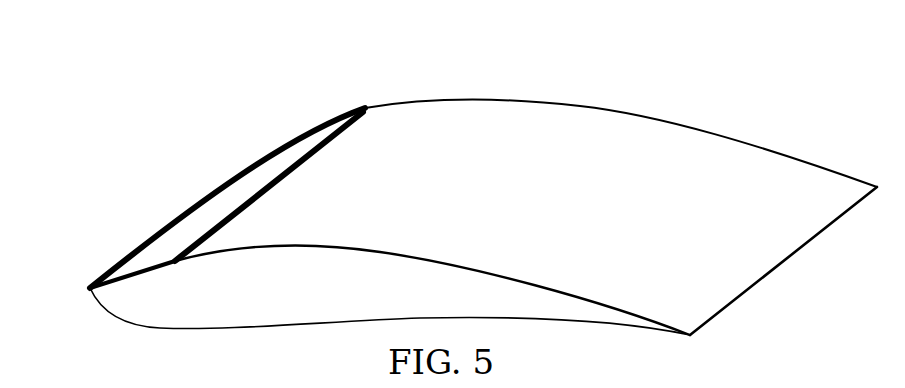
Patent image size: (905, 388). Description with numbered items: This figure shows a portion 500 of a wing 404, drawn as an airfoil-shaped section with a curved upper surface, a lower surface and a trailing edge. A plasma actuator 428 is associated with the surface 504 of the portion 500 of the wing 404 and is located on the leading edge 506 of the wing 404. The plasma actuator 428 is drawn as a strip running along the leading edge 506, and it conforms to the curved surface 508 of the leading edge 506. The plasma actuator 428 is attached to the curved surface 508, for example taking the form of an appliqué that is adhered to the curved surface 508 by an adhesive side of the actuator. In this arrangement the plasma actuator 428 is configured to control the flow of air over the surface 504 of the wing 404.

The portion of wing 500 is at (439, 174).
The wing 404 is at (483, 174).
The surface 504 is at (395, 117).
The plasma actuator 428 is at (244, 166).
The leading edge 506 is at (86, 297).
The curved surface 508 is at (179, 268).